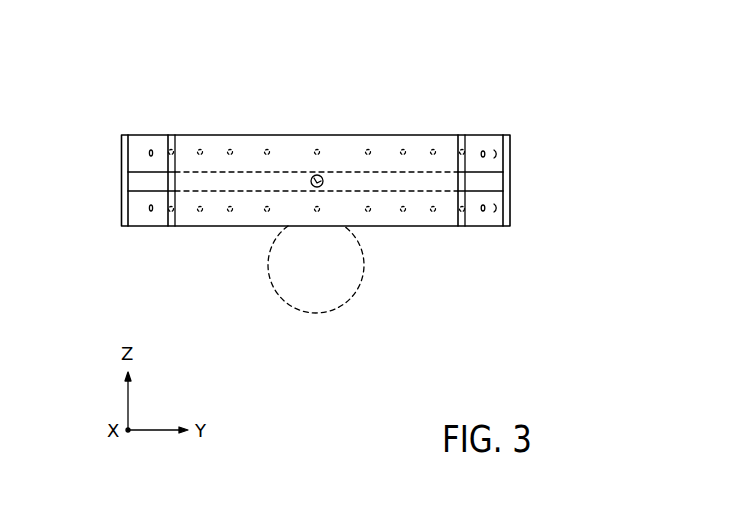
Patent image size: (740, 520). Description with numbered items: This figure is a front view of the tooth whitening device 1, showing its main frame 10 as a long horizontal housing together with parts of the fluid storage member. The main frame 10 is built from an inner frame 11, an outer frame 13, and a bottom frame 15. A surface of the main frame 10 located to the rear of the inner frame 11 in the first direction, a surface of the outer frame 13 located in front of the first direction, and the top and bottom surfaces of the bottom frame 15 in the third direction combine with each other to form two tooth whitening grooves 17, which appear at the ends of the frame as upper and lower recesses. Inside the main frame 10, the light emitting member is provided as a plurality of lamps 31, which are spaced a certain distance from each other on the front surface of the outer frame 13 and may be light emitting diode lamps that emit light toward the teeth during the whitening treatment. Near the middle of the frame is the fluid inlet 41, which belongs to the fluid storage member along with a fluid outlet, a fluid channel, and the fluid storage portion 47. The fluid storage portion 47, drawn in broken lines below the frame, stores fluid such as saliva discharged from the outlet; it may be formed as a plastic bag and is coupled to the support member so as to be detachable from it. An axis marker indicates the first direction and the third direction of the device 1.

The tooth whitening device 1 is at (144, 25).
The main frame 10 is at (492, 135).
The inner frame 11 is at (460, 226).
The outer frame 13 is at (507, 228).
The bottom frame 15 is at (487, 183).
The tooth whitening grooves 17 is at (497, 157).
The lamps 31 is at (150, 153).
The fluid inlet 41 is at (312, 176).
The fluid storage portion 47 is at (345, 300).